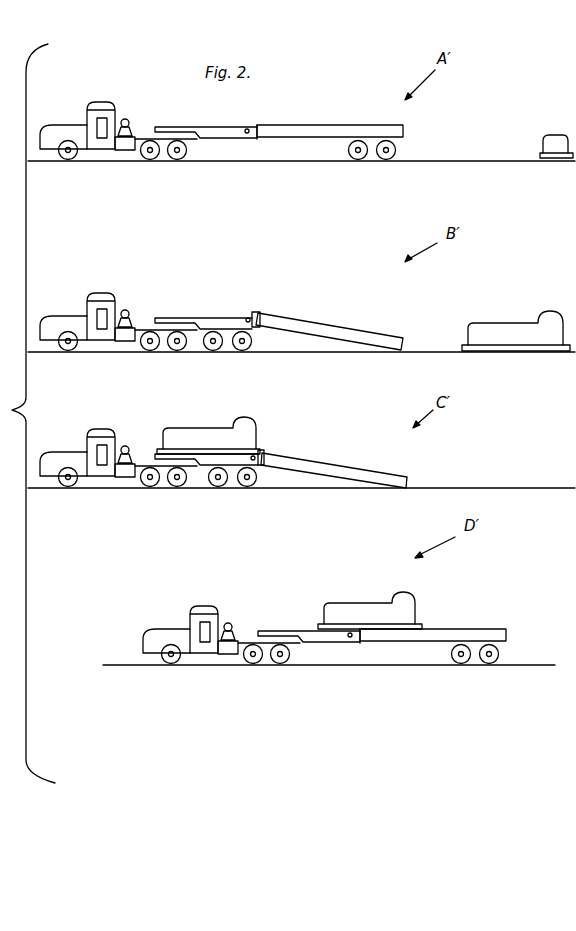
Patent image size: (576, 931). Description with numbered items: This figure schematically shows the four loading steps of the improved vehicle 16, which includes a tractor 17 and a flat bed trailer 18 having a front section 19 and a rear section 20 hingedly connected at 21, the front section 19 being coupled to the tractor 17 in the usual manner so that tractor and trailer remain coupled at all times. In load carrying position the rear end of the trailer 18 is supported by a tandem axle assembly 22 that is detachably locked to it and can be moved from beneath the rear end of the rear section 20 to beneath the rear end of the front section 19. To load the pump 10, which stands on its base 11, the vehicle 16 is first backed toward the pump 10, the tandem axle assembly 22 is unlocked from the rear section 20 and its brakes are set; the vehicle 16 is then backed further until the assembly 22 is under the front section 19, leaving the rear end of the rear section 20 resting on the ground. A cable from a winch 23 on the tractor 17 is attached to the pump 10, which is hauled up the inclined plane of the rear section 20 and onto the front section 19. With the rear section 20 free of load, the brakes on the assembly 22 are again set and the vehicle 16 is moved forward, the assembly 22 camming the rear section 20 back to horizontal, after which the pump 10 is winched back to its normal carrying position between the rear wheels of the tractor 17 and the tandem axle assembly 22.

The pump 10 is at (553, 135).
The base plate 11 is at (542, 152).
The vehicle 16 is at (148, 80).
The tractor 17 is at (54, 126).
The flat bed trailer 18 is at (257, 125).
The front section 19 is at (198, 127).
The rear section 20 is at (314, 125).
The hinge connection 21 is at (246, 133).
The tandem axle assembly 22 is at (352, 158).
The winch 23 is at (126, 119).